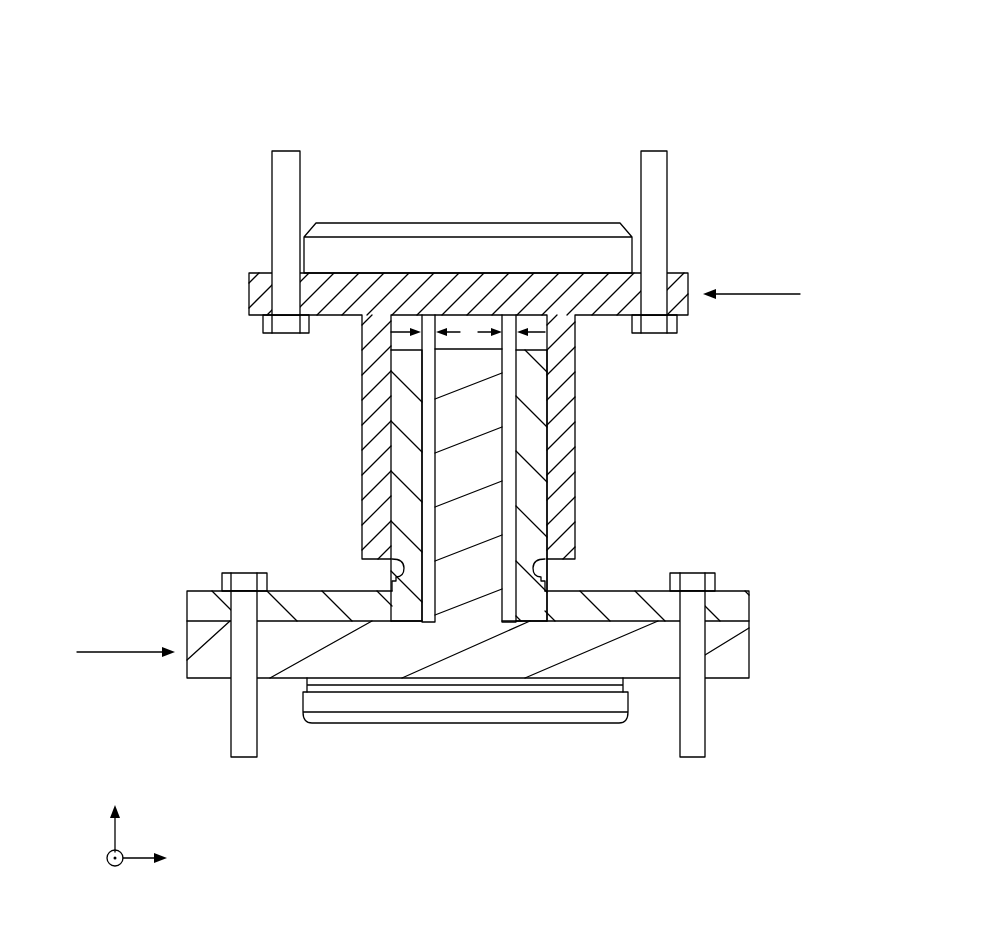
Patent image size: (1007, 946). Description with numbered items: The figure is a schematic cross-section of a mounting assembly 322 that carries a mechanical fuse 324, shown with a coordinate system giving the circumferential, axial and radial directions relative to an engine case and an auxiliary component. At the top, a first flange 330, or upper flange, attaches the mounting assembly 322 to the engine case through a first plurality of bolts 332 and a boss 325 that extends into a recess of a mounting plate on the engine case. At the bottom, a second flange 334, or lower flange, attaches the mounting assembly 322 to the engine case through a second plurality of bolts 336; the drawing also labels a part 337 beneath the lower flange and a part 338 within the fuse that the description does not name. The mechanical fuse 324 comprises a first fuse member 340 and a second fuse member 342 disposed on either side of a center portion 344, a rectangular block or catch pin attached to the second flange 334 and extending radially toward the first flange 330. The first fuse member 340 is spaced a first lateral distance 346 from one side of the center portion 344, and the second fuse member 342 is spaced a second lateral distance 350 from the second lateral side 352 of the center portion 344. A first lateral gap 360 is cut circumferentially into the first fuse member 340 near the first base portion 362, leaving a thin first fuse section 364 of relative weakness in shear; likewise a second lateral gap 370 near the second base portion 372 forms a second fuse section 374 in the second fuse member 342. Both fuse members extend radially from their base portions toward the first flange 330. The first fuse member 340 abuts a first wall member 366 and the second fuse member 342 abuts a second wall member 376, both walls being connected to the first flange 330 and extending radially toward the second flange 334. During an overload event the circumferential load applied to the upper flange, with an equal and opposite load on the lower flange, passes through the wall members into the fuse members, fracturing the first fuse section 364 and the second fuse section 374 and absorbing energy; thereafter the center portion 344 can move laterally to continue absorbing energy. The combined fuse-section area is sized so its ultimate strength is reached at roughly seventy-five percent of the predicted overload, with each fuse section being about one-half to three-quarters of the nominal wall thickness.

The mounting assembly 322 is at (189, 124).
The mechanical fuse 324 is at (324, 442).
The boss 325 is at (455, 242).
The first flange 330 is at (678, 273).
The first plurality of bolts 332 is at (653, 156).
The second flange 334 is at (745, 650).
The second plurality of bolts 336 is at (700, 720).
The bottom plate 337 is at (312, 700).
The inner gap 338 is at (503, 423).
The first fuse member 340 is at (535, 453).
The second fuse member 342 is at (398, 473).
The center portion 344 is at (475, 530).
The first lateral distance 346 is at (548, 335).
The second lateral distance 350 is at (396, 333).
The second lateral side 352 is at (433, 413).
The first lateral gap 360 is at (568, 573).
The first base portion 362 is at (565, 605).
The first fuse section 364 is at (528, 572).
The first wall member 366 is at (570, 468).
The second lateral gap 370 is at (374, 572).
The second base portion 372 is at (383, 607).
The second fuse section 374 is at (415, 570).
The second wall member 376 is at (367, 502).